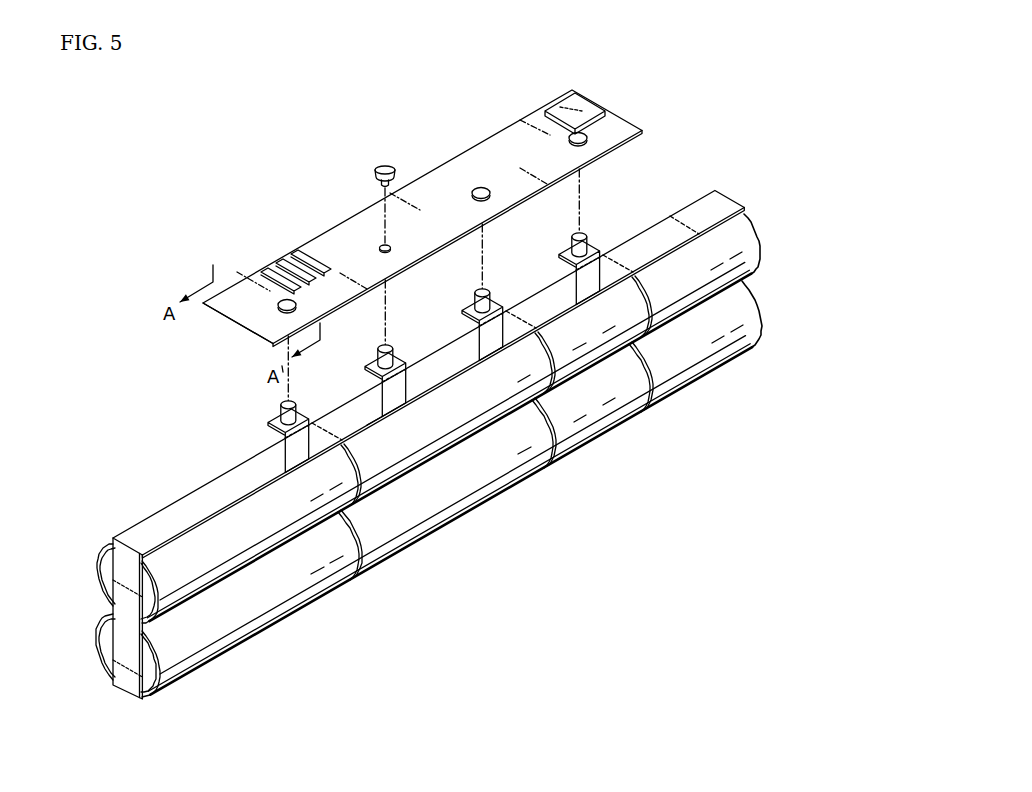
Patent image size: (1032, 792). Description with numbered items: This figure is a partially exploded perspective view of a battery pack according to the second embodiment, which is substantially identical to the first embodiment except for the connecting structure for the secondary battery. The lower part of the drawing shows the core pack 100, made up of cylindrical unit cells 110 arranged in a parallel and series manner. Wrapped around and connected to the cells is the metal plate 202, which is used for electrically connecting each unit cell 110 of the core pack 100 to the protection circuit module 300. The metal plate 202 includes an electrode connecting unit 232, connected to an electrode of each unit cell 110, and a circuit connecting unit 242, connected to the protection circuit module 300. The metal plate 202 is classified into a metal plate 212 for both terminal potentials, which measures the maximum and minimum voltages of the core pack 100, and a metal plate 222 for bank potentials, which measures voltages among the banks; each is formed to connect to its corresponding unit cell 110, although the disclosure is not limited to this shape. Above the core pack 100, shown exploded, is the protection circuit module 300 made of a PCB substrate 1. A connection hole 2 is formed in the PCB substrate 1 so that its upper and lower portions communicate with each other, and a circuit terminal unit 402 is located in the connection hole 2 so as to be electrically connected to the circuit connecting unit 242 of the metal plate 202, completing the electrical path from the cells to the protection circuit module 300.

The PCB substrate 1 is at (232, 310).
The connection hole 2 is at (379, 246).
The core pack 100 is at (632, 448).
The unit cell 110 is at (250, 540).
The metal plate 202 is at (450, 594).
The metal plate for both terminal potentials 212 is at (613, 285).
The metal plate for bank potentials 222 is at (502, 344).
The electrode connecting unit 232 is at (125, 607).
The circuit connecting unit 242 is at (284, 440).
The protection circuit module 300 is at (438, 139).
The circuit terminal unit 402 is at (375, 171).